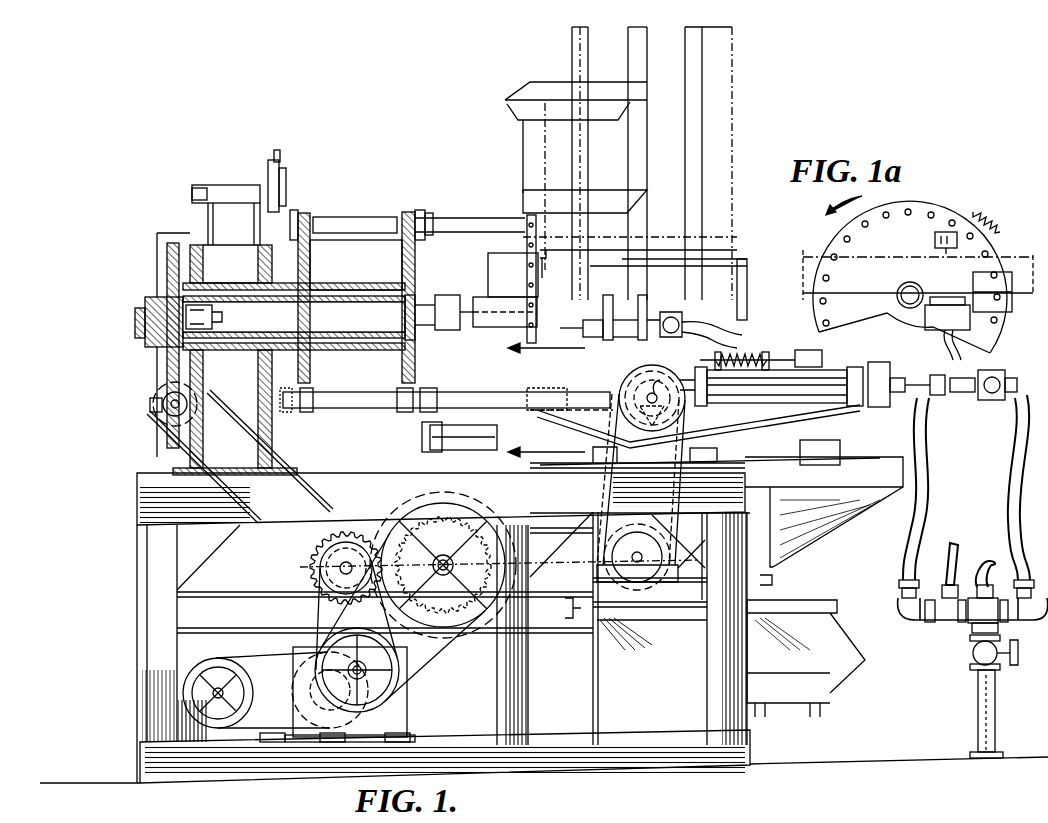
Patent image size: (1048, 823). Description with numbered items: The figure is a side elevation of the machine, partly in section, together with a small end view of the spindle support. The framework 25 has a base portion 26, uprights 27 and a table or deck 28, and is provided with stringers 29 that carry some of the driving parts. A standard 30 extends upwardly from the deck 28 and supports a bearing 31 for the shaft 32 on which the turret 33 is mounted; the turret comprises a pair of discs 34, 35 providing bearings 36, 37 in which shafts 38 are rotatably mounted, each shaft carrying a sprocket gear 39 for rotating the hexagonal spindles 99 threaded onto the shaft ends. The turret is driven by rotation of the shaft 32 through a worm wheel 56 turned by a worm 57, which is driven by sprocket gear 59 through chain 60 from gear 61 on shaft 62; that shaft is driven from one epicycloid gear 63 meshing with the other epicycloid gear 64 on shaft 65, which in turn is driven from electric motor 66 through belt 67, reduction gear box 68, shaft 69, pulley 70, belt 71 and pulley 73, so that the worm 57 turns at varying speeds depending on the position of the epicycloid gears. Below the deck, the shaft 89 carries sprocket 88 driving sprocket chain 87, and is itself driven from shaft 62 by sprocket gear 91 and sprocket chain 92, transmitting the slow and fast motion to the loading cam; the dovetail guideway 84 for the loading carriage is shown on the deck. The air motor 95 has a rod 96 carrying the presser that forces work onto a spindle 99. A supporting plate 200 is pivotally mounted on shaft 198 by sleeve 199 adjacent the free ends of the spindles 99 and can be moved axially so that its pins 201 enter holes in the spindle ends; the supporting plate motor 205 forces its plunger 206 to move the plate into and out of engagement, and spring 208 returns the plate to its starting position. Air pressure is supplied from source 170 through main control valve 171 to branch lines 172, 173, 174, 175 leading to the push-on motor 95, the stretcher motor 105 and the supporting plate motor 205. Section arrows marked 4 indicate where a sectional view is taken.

In FIG. 1, the section line 4 is at (519, 400).
In FIG. 1, the framework 25 is at (104, 536).
In FIG. 1, the base portion 26 is at (228, 773).
In FIG. 1, the uprights 27 is at (150, 638).
In FIG. 1, the table or deck 28 is at (140, 482).
In FIG. 1, the stringers 29 is at (212, 600).
In FIG. 1, the standard 30 is at (272, 420).
In FIG. 1, the bearing 31 is at (217, 356).
In FIG. 1, the shaft 32 is at (299, 316).
In FIG. 1, the turret 33 is at (352, 200).
In FIG. 1, the disc 34 is at (300, 260).
In FIG. 1, the disc 35 is at (398, 262).
In FIG. 1, the bearing 36 is at (308, 215).
In FIG. 1, the bearing 37 is at (410, 212).
In FIG. 1, the shaft 38 is at (372, 215).
In FIG. 1, the sprocket gear 39 is at (290, 288).
In FIG. 1, the worm wheel 56 is at (168, 268).
In FIG. 1, the worm 57 is at (163, 400).
In FIG. 1, the sprocket gear 59 is at (172, 442).
In FIG. 1, the chain 60 is at (284, 451).
In FIG. 1, the gear 61 is at (300, 575).
In FIG. 1, the shaft 62 is at (346, 568).
In FIG. 1, the epicycloid gear 63 is at (305, 600).
In FIG. 1, the epicycloid gear 64 is at (443, 560).
In FIG. 1, the shaft 65 is at (495, 495).
In FIG. 1, the electric motor 66 is at (190, 735).
In FIG. 1, the belt 67 is at (262, 660).
In FIG. 1, the reduction gear box 68 is at (390, 710).
In FIG. 1, the shaft 69 is at (397, 688).
In FIG. 1, the pulley 70 is at (349, 692).
In FIG. 1, the belt 71 is at (440, 663).
In FIG. 1, the pulley 73 is at (397, 645).
In FIG. 1, the dovetail guideway 84 is at (715, 440).
In FIG. 1, the sprocket chain 87 is at (690, 486).
In FIG. 1, the sprocket 88 is at (655, 583).
In FIG. 1, the shaft 89 is at (663, 538).
In FIG. 1, the sprocket gear 91 is at (603, 615).
In FIG. 1, the sprocket chain 92 is at (571, 597).
In FIG. 1, the air motor 95 is at (786, 352).
In FIG. 1, the rod 96 is at (594, 392).
In FIG. 1, the spindle 99 is at (470, 230).
In FIG. 1, the stretcher motor 105 is at (978, 408).
In FIG. 1, the source 170 is at (992, 712).
In FIG. 1, the main control valve 171 is at (970, 652).
In FIG. 1, the branch line 172 is at (905, 550).
In FIG. 1, the branch line 173 is at (1010, 492).
In FIG. 1, the branch line 174 is at (960, 556).
In FIG. 1, the branch line 175 is at (1005, 548).
In FIG. 1A, the branch line 175 is at (945, 340).
In FIG. 1, the shaft 198 is at (468, 327).
In FIG. 1, the sleeve 199 is at (505, 328).
In FIG. 1, the supporting plate 200 is at (527, 215).
In FIG. 1A, the supporting plate 200 is at (940, 210).
In FIG. 1, the pins 201 is at (517, 264).
In FIG. 1, the supporting plate motor 205 is at (642, 315).
In FIG. 1A, the supporting plate motor 205 is at (935, 296).
In FIG. 1, the plunger 206 is at (578, 318).
In FIG. 1A, the spring 208 is at (998, 226).